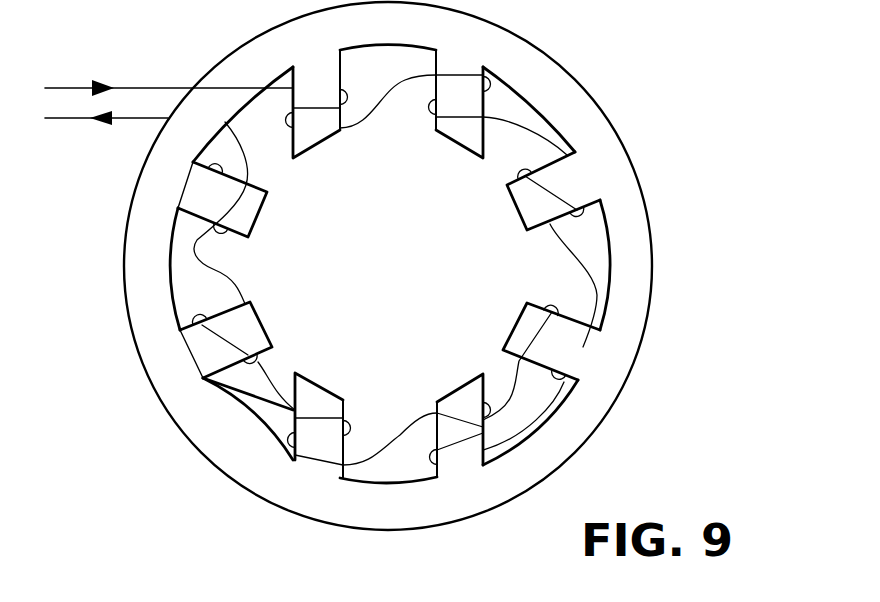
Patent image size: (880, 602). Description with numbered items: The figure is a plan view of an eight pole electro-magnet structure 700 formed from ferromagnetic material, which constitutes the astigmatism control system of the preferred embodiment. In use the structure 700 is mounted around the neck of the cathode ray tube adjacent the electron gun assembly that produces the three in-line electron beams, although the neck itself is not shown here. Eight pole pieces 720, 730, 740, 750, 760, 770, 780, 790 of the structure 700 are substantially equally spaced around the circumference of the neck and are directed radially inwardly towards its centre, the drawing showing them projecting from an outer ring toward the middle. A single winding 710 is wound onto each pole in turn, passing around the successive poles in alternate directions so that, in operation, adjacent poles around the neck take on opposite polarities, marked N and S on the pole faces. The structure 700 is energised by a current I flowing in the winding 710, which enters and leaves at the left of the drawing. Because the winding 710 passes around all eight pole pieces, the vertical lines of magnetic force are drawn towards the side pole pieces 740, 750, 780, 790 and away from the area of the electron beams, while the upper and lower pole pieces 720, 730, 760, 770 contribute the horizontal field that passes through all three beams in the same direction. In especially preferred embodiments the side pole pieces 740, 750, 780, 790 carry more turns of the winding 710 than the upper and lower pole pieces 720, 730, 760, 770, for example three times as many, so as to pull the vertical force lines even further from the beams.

The eight pole electro-magnet structure 700 is at (592, 100).
The winding 710 is at (171, 46).
The pole piece 720 is at (312, 148).
The pole piece 730 is at (455, 138).
The side pole piece 740 is at (519, 212).
The side pole piece 750 is at (516, 325).
The pole piece 760 is at (472, 378).
The pole piece 770 is at (321, 388).
The side pole piece 780 is at (264, 326).
The side pole piece 790 is at (255, 226).